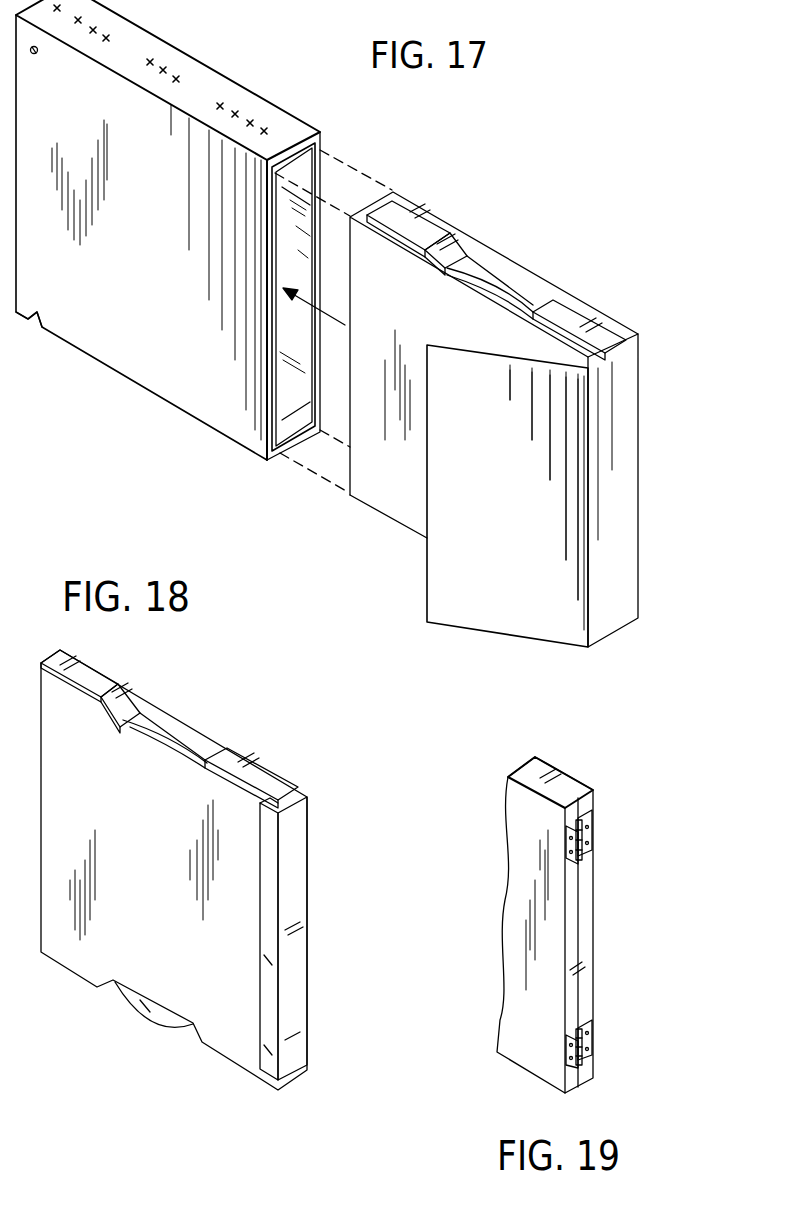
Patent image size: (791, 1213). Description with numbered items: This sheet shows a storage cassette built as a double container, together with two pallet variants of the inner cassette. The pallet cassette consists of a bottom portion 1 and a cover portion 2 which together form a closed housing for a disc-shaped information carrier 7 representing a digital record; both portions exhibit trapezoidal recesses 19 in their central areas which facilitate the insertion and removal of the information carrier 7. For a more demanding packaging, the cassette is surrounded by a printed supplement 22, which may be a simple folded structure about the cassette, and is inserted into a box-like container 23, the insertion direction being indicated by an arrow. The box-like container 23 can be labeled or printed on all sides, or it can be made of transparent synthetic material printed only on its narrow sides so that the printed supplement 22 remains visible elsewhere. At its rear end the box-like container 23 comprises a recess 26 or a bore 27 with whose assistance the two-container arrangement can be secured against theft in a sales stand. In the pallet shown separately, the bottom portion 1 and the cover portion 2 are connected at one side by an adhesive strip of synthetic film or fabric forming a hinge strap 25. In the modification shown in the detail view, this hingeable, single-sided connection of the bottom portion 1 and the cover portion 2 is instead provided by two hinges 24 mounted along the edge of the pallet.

In FIG. 17, the bottom portion 1 is at (378, 212).
In FIG. 18, the bottom portion 1 is at (82, 680).
In FIG. 19, the bottom portion 1 is at (513, 828).
In FIG. 17, the cover portion 2 is at (423, 223).
In FIG. 18, the cover portion 2 is at (95, 668).
In FIG. 19, the cover portion 2 is at (569, 776).
In FIG. 17, the disc-shaped information carrier 7 is at (482, 282).
In FIG. 17, the trapezoidal recesses 19 is at (457, 252).
In FIG. 18, the trapezoidal recesses 19 is at (135, 700).
In FIG. 17, the printed supplement 22 is at (437, 582).
In FIG. 17, the box-like container 23 is at (167, 62).
In FIG. 19, the hinges 24 is at (593, 833).
In FIG. 18, the hinge strap 25 is at (302, 875).
In FIG. 17, the recess 26 is at (35, 325).
In FIG. 17, the bore 27 is at (37, 55).